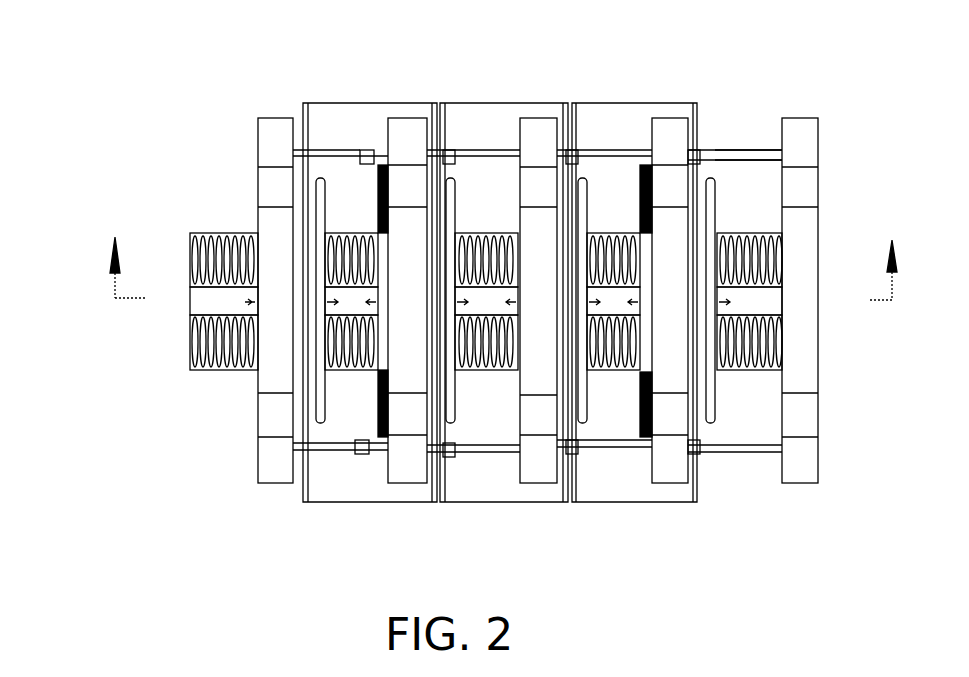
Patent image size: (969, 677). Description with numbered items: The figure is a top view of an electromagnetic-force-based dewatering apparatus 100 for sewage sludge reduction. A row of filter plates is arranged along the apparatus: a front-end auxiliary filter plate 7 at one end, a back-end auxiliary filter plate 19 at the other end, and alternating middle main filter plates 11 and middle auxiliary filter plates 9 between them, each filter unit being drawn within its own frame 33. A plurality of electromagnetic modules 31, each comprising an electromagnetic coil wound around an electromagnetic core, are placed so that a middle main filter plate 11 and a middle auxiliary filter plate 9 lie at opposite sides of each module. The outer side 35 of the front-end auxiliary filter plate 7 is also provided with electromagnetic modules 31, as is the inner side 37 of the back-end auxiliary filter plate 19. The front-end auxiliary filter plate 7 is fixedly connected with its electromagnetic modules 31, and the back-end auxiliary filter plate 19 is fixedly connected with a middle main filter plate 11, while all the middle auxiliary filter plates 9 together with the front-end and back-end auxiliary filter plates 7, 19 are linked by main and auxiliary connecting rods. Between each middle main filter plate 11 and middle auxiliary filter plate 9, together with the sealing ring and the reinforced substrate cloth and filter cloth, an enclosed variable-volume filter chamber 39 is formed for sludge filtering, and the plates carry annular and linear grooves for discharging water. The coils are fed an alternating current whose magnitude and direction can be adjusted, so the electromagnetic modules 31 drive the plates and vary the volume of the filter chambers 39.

The electromagnetic-force-based dewatering apparatus 100 is at (90, 98).
The outer side of the front-end auxiliary filter plate 35 is at (257, 143).
The front-end auxiliary filter plate 7 is at (283, 115).
The middle main filter plate 11 is at (316, 175).
The frame 33 is at (360, 102).
The middle auxiliary filter plate 9 is at (417, 137).
The back-end auxiliary filter plate 19 is at (802, 133).
The inner side of the back-end auxiliary filter plate 37 is at (780, 217).
The electromagnetic module 31 is at (180, 302).
The filter chamber 39 is at (352, 415).